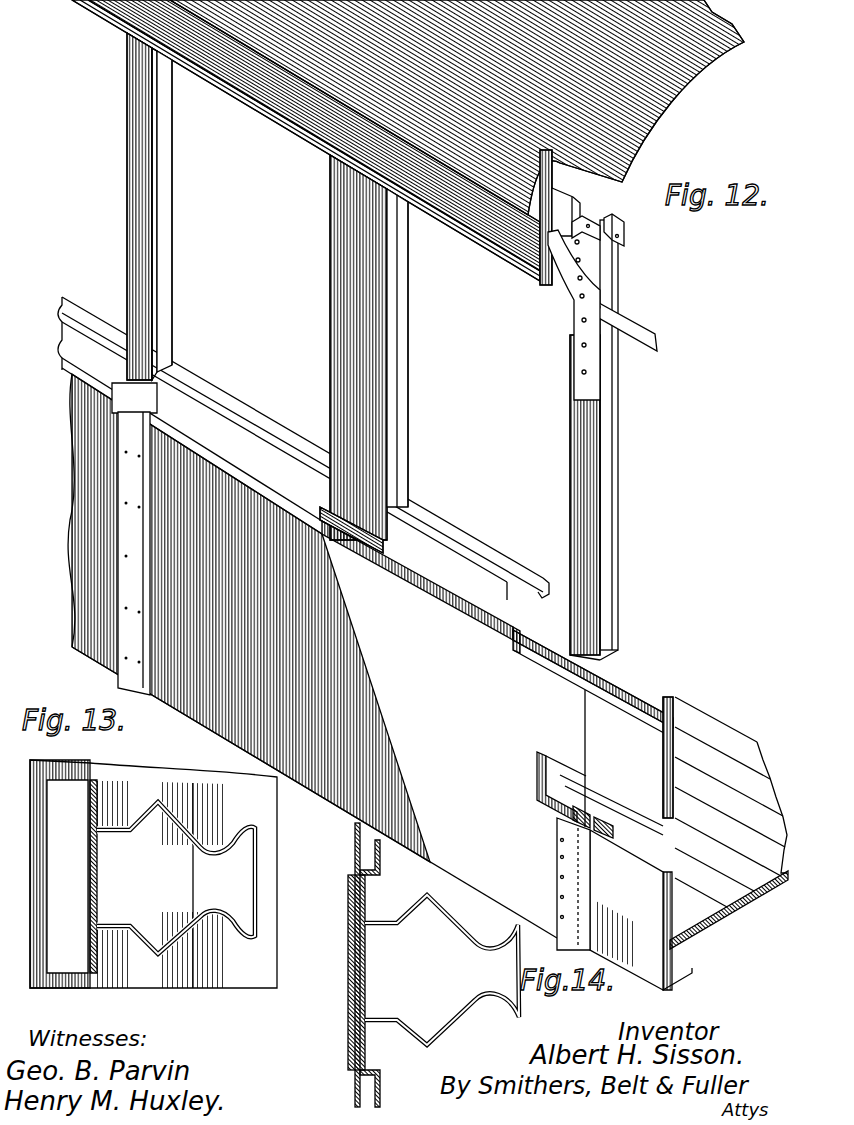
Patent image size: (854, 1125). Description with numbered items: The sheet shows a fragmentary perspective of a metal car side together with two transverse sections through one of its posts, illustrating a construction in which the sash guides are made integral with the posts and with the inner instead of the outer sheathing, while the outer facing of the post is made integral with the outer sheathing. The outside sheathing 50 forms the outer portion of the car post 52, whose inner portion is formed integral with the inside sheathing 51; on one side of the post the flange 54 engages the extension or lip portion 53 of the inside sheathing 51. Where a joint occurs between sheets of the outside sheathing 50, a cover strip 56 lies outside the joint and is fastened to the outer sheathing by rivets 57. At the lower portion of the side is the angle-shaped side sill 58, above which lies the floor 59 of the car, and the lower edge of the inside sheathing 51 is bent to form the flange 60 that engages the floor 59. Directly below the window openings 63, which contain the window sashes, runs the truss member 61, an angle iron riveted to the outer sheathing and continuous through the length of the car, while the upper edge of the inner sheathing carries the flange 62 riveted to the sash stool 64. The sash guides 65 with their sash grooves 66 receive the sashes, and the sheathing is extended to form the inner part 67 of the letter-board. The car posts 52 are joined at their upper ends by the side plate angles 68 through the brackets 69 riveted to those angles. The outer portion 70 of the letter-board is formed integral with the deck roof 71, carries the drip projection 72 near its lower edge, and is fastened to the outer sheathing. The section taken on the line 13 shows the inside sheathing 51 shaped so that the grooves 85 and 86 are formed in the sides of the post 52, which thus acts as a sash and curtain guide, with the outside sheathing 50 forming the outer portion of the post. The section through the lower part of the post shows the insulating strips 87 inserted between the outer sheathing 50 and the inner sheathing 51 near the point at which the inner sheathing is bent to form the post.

In FIG. 12, the section line 13 is at (97, 290).
In FIG. 12, the outside sheathing 50 is at (326, 656).
In FIG. 13, the outside sheathing 50 is at (153, 874).
In FIG. 14, the outside sheathing 50 is at (355, 845).
In FIG. 12, the inside sheathing 51 is at (551, 802).
In FIG. 13, the inside sheathing 51 is at (100, 801).
In FIG. 14, the inside sheathing 51 is at (380, 866).
In FIG. 12, the car post 52 is at (585, 808).
In FIG. 13, the car post 52 is at (253, 888).
In FIG. 14, the car post 52 is at (515, 1005).
In FIG. 12, the lip portion 53 is at (592, 833).
In FIG. 14, the lip portion 53 is at (372, 1072).
In FIG. 12, the flange 54 is at (606, 277).
In FIG. 14, the flange 54 is at (370, 1040).
In FIG. 12, the cover strip 56 is at (570, 930).
In FIG. 12, the rivets 57 is at (557, 840).
In FIG. 12, the side sill 58 is at (700, 967).
In FIG. 12, the floor 59 is at (770, 880).
In FIG. 12, the flange 60 is at (682, 932).
In FIG. 12, the truss member 61 is at (622, 690).
In FIG. 12, the flange 62 is at (678, 696).
In FIG. 12, the openings 63 is at (337, 283).
In FIG. 12, the sash stool 64 is at (415, 573).
In FIG. 12, the sash guides 65 is at (408, 456).
In FIG. 12, the sash grooves 66 is at (393, 415).
In FIG. 12, the inner part of the letter-board 67 is at (552, 262).
In FIG. 12, the side plate angles 68 is at (562, 206).
In FIG. 12, the brackets 69 is at (598, 232).
In FIG. 12, the outer portion of the letter-board 70 is at (470, 212).
In FIG. 12, the deck roof 71 is at (457, 107).
In FIG. 12, the drip projection 72 is at (523, 279).
In FIG. 13, the groove 85 is at (124, 822).
In FIG. 13, the groove 86 is at (210, 838).
In FIG. 14, the insulating strips 87 is at (366, 905).